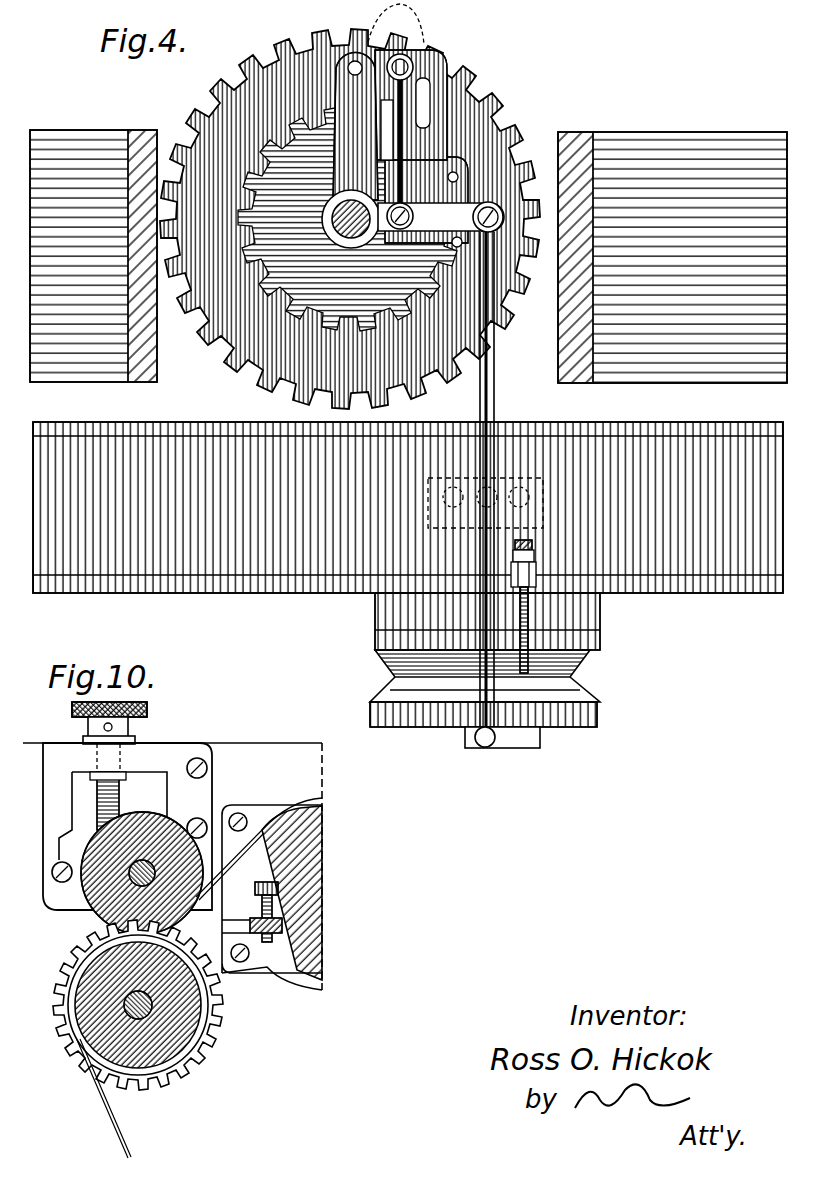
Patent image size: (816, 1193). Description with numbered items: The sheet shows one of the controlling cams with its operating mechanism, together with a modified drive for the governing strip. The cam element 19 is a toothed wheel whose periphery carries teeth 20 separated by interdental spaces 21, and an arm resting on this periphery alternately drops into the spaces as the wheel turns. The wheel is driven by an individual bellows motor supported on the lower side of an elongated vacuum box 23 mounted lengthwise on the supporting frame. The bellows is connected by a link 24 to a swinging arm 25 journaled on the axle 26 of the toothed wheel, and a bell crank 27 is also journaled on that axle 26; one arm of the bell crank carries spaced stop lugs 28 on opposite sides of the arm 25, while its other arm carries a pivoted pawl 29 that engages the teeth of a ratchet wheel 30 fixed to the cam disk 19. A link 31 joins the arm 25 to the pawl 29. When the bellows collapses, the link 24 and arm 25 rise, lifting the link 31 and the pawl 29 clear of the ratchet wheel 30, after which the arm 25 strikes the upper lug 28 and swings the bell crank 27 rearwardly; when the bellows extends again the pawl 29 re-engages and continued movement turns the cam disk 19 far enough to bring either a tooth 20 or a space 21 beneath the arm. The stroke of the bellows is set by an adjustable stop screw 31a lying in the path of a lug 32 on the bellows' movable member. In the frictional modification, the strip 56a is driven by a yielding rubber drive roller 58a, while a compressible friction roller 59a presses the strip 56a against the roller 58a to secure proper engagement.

In FIG. 4, the cam element 19 is at (200, 284).
In FIG. 4, the teeth 20 is at (338, 42).
In FIG. 4, the interdental spaces 21 is at (262, 62).
In FIG. 4, the vacuum box 23 is at (306, 586).
In FIG. 4, the link 24 is at (497, 410).
In FIG. 4, the swinging arm 25 is at (441, 217).
In FIG. 4, the axle 26 is at (347, 228).
In FIG. 4, the bell crank 27 is at (364, 160).
In FIG. 4, the stop lugs 28 is at (455, 176).
In FIG. 4, the pawl 29 is at (412, 68).
In FIG. 4, the ratchet wheel 30 is at (432, 137).
In FIG. 4, the link 31 is at (403, 110).
In FIG. 4, the adjustable stop screw 31a is at (532, 612).
In FIG. 4, the lug 32 is at (530, 748).
In FIG. 10, the strip 56a is at (120, 1134).
In FIG. 10, the drive roller 58a is at (200, 1008).
In FIG. 10, the friction roller 59a is at (96, 918).